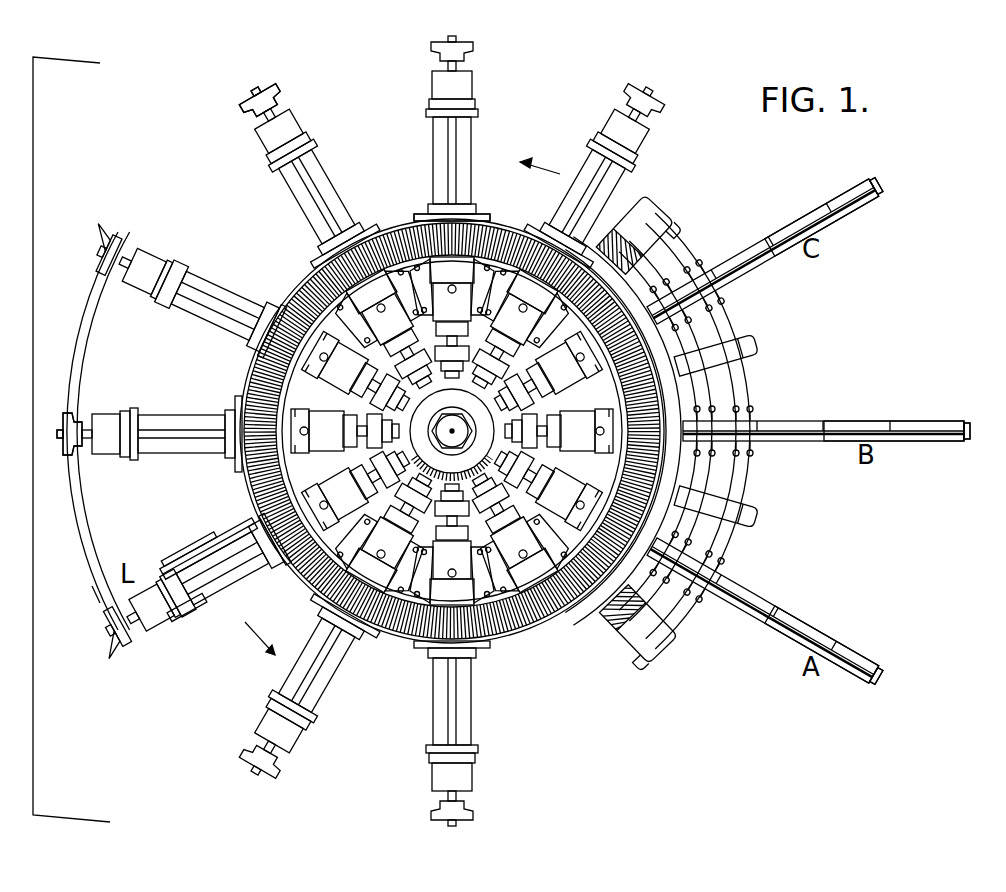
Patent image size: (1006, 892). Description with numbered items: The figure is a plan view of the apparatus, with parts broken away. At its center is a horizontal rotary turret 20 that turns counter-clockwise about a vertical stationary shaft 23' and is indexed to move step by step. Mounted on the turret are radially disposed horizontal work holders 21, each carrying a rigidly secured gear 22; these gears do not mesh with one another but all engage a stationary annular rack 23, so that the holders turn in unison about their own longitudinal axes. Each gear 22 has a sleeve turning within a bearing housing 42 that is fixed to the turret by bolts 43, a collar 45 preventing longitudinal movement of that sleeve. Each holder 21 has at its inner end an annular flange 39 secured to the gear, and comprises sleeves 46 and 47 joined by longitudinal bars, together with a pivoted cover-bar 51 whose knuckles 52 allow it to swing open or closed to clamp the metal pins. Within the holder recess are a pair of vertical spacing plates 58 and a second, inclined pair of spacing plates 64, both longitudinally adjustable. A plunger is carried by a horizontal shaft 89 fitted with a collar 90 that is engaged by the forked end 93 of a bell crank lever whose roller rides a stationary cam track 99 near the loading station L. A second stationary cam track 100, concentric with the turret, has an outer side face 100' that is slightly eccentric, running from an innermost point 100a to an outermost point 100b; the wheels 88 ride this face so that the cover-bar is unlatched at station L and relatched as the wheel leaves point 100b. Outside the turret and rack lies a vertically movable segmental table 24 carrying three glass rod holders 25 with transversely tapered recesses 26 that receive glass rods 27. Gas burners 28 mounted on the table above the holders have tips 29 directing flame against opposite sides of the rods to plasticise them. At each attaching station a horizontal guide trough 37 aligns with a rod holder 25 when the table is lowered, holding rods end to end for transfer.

The rotary turret 20 is at (452, 431).
The work holder 21 is at (432, 174).
The gear 22 is at (432, 222).
The stationary annular rack 23 is at (623, 441).
The vertical stationary shaft 23' is at (452, 424).
The segmental table 24 is at (702, 612).
The glass rod holder 25 is at (700, 272).
The transversely tapered recess 26 is at (771, 242).
The glass rod 27 is at (812, 218).
The gas burner 28 is at (740, 345).
The burner tip 29 is at (725, 298).
The guide trough 37 is at (858, 212).
The annular flange 39 is at (490, 220).
The bearing housing 42 is at (452, 432).
The bolt 43 is at (395, 280).
The collar 45 is at (336, 363).
The sleeve 46 is at (262, 312).
The sleeve 47 is at (182, 276).
The cover-bar 51 is at (220, 300).
The knuckle 52 is at (200, 615).
The spacing plate 58 is at (222, 545).
The second spacing plate 64 is at (222, 568).
The wheel 88 is at (266, 100).
The horizontal shaft 89 is at (379, 427).
The collar 90 is at (512, 390).
The forked end 93 is at (530, 410).
The stationary cam track 99 is at (247, 478).
The stationary cam track 100 is at (103, 431).
The outer side face 100' is at (75, 601).
The innermost point 100a is at (127, 232).
The outermost point 100b is at (124, 640).